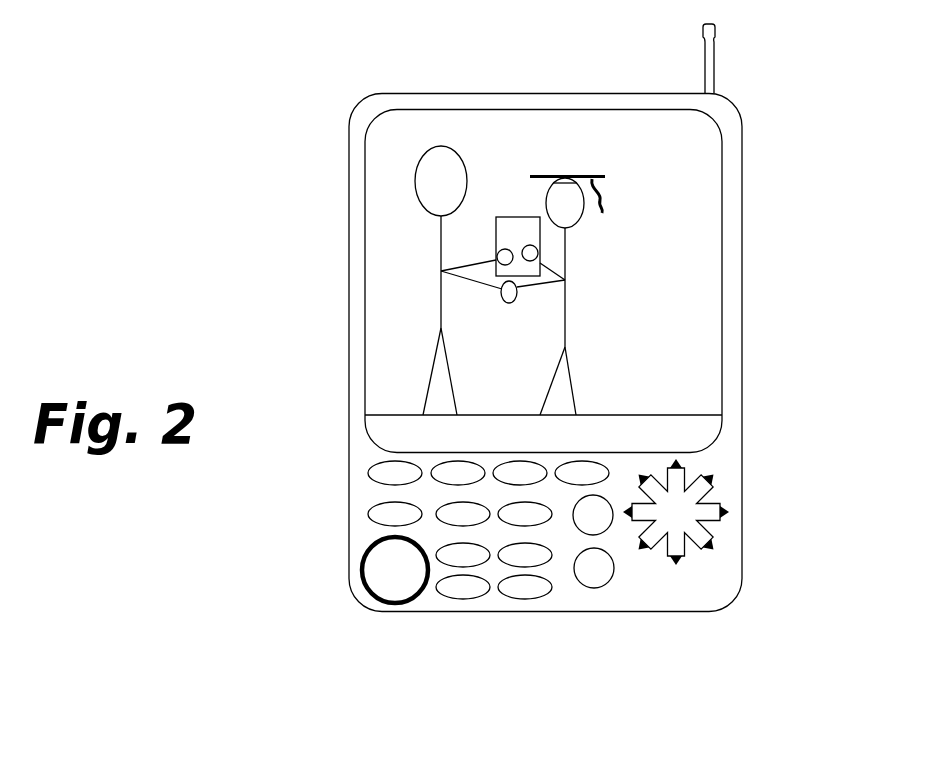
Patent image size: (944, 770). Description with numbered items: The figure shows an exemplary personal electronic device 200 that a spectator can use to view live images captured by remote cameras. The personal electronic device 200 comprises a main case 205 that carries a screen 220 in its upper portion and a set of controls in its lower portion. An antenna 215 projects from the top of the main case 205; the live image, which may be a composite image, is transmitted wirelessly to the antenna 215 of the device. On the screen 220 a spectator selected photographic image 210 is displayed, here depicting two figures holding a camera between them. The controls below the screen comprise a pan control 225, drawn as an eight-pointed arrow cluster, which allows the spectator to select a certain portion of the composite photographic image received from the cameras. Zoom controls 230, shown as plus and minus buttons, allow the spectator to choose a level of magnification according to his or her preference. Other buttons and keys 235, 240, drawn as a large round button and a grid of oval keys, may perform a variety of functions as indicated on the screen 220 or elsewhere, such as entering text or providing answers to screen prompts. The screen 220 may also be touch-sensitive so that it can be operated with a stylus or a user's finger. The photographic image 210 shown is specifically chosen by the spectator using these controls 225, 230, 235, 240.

The personal electronic device 200 is at (330, 99).
The main case 205 is at (732, 227).
The photographic image 210 is at (383, 283).
The antenna 215 is at (712, 60).
The screen 220 is at (729, 447).
The pan control 225 is at (677, 512).
The zoom controls 230 is at (630, 628).
The button 235 is at (388, 564).
The key 240 is at (363, 490).